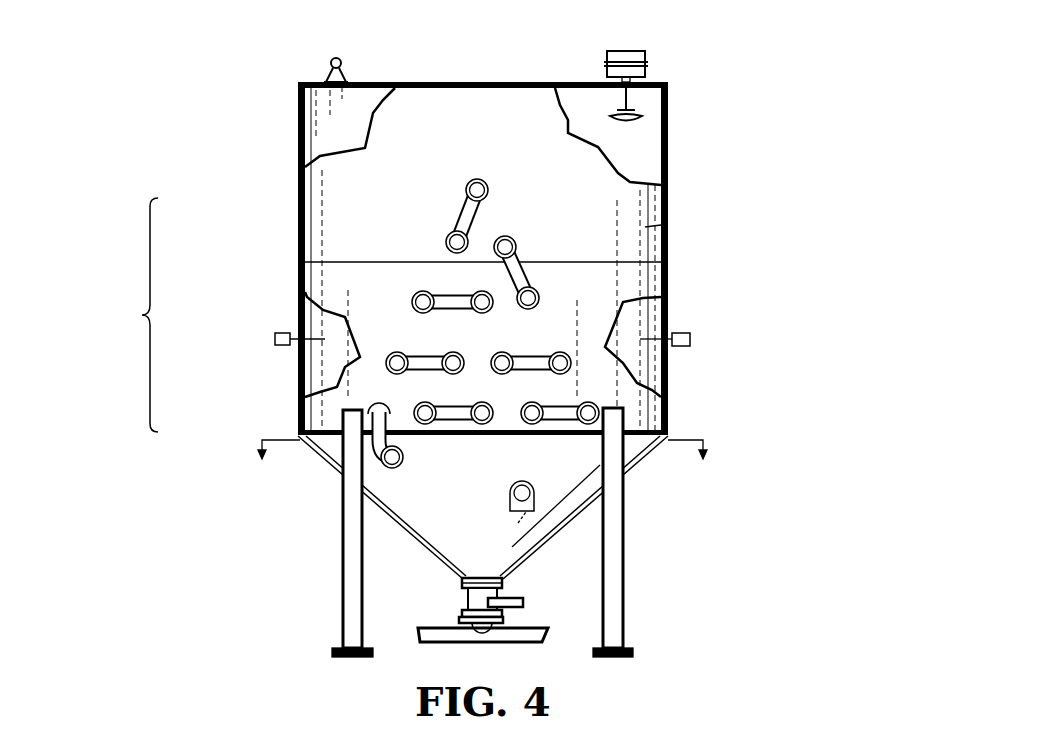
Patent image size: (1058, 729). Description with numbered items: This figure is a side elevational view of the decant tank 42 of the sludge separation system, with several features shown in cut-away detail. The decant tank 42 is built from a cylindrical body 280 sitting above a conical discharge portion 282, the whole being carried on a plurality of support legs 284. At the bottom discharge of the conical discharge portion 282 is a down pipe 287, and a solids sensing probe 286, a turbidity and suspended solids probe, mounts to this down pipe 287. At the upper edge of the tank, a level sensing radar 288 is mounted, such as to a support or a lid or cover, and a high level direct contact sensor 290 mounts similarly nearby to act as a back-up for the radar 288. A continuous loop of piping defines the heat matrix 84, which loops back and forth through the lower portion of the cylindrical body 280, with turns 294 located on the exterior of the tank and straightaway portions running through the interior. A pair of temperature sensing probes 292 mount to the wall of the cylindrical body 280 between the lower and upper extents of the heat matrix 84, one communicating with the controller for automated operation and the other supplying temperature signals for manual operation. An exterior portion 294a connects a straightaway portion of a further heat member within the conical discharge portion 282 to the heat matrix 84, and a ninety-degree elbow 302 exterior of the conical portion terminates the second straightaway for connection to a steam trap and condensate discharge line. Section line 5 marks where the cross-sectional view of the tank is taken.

The decant tank 42 is at (668, 156).
The heat matrix 84 is at (133, 315).
The cylindrical body 280 is at (645, 227).
The conical discharge portion 282 is at (535, 500).
The support legs 284 is at (348, 596).
The solids sensing probe 286 is at (512, 598).
The down pipe 287 is at (466, 600).
The level sensing radar 288 is at (334, 58).
The high level direct contact sensor 290 is at (645, 53).
The temperature sensing probes 292 is at (275, 338).
The turns 294 is at (452, 214).
The exterior portion 294a is at (377, 455).
The 90° elbow 302 is at (567, 484).
The line 5- 5 is at (483, 465).